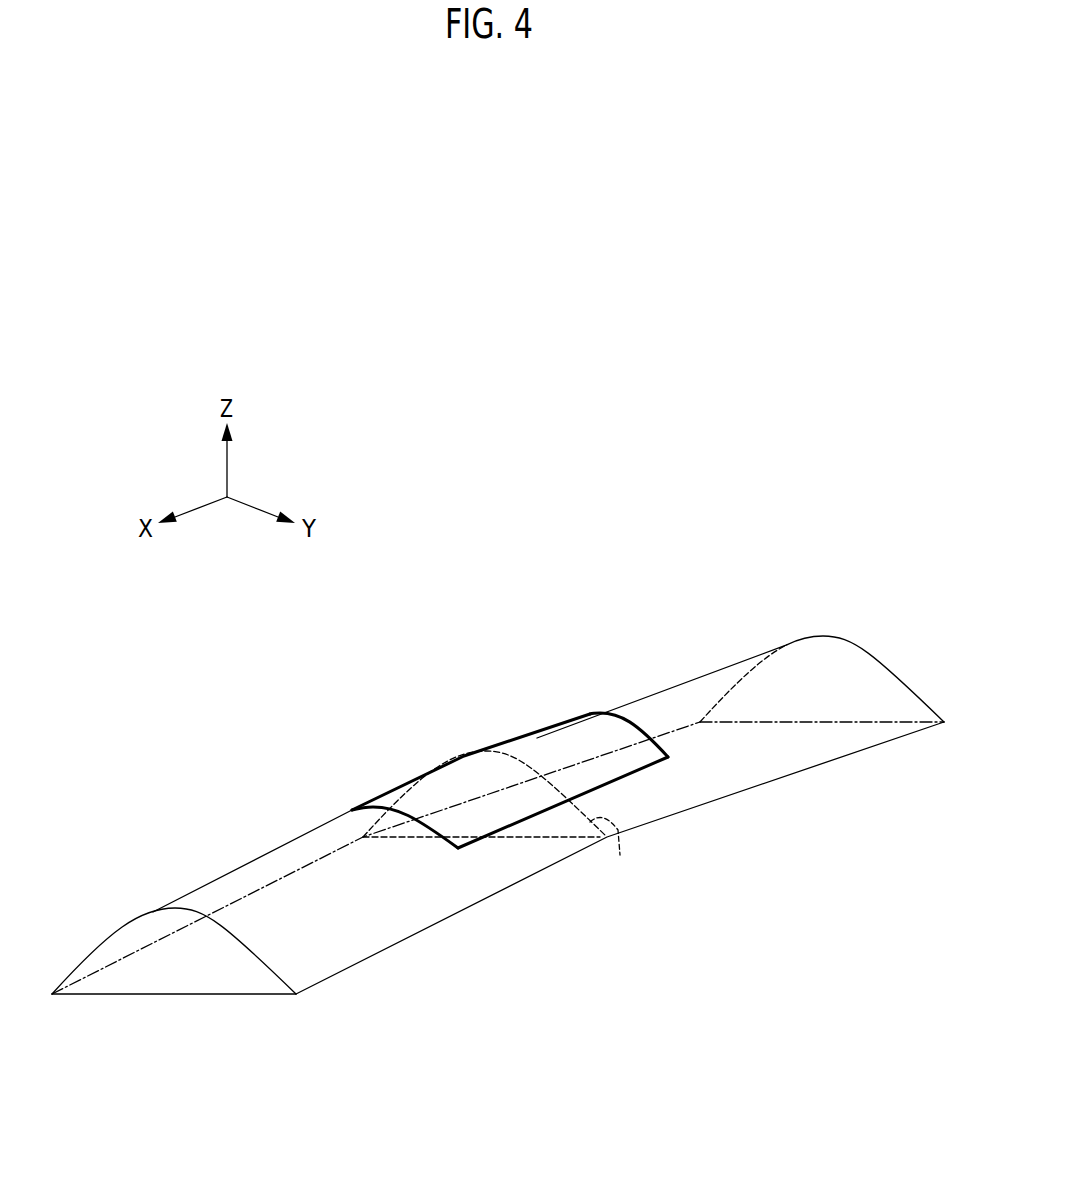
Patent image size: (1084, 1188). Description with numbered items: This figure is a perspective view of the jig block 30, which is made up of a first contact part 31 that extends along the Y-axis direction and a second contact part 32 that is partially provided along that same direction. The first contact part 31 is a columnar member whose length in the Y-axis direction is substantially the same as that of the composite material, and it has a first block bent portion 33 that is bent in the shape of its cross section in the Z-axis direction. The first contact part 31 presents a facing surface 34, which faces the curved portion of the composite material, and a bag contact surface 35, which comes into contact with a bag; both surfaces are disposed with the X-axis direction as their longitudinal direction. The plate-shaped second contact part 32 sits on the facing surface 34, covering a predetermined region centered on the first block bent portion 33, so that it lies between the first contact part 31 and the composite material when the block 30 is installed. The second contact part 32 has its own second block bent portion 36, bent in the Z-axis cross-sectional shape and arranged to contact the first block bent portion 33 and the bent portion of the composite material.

The block 30 is at (791, 552).
The first contact part 31 is at (868, 626).
The second contact part 32 is at (541, 708).
The first block bent portion 33 is at (620, 855).
The facing surface 34 is at (657, 710).
The bag contact surface 35 is at (818, 763).
The second block bent portion 36 is at (497, 745).